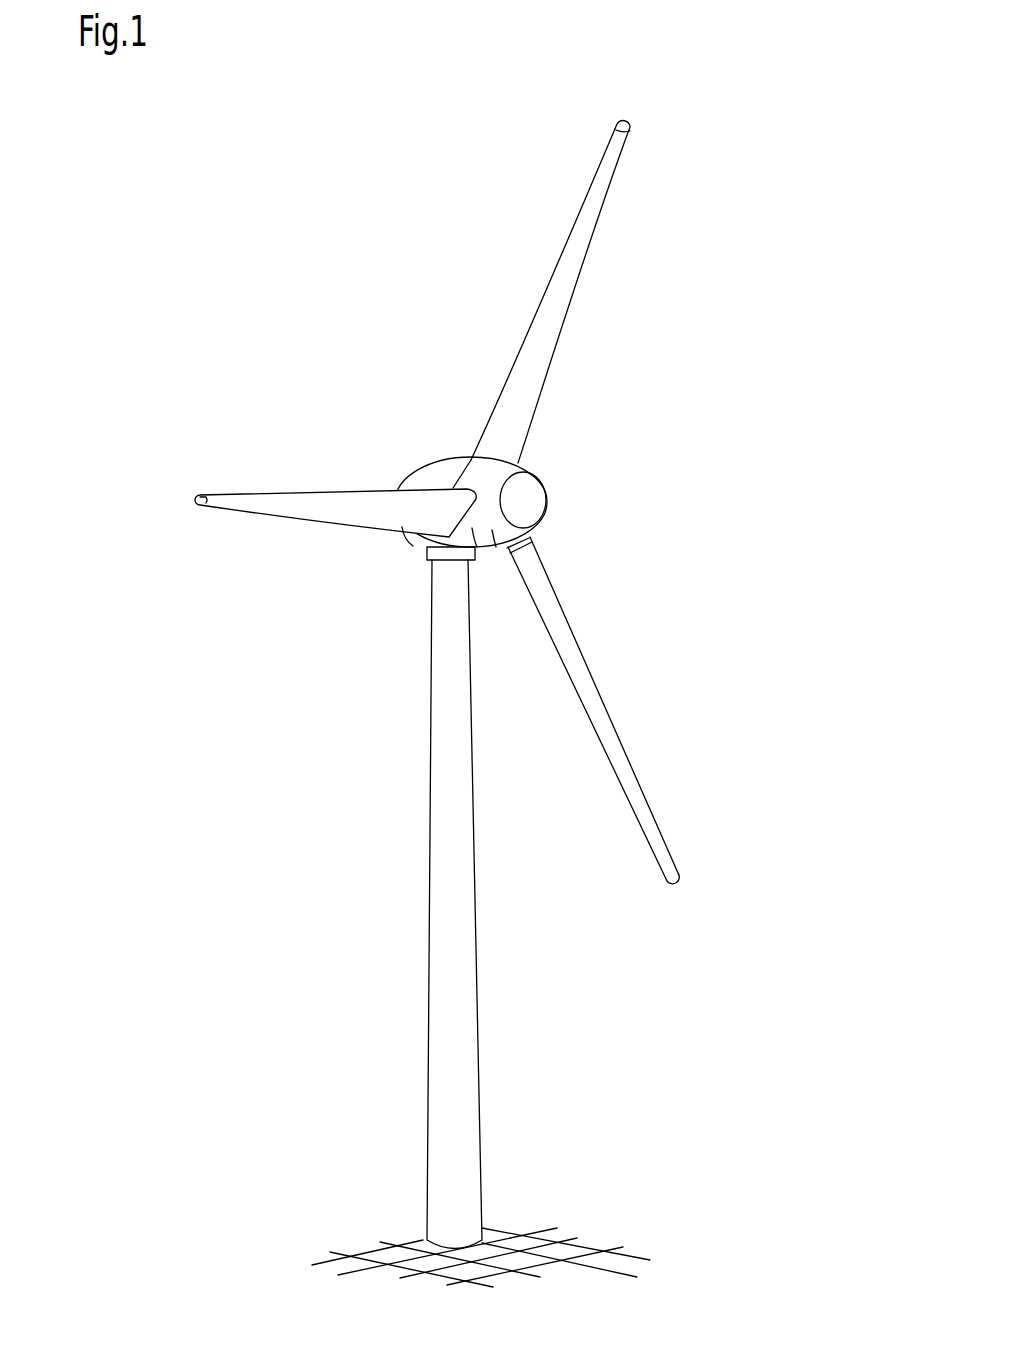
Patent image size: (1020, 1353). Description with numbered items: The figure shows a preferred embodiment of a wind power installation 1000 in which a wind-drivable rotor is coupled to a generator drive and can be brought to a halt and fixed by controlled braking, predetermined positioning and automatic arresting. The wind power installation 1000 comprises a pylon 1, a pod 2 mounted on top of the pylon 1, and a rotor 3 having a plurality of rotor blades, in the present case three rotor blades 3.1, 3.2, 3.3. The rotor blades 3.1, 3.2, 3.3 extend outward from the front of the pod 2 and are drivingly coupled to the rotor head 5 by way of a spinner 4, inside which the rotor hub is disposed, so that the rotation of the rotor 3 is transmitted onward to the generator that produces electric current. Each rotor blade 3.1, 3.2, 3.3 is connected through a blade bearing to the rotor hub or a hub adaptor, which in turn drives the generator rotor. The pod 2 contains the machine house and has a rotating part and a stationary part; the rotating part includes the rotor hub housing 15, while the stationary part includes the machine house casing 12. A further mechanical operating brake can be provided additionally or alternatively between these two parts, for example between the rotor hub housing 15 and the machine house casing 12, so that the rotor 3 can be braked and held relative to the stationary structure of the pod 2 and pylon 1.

The wind power installation 1000 is at (318, 167).
The pylon 1 is at (453, 908).
The pod 2 is at (427, 452).
The rotor 3 is at (489, 306).
The rotor blade 3.1 is at (559, 307).
The rotor blade 3.2 is at (565, 611).
The rotor blade 3.3 is at (298, 491).
The spinner 4 is at (478, 542).
The rotor head 5 is at (535, 489).
The machine house casing 12 is at (405, 545).
The rotor hub housing 15 is at (490, 540).